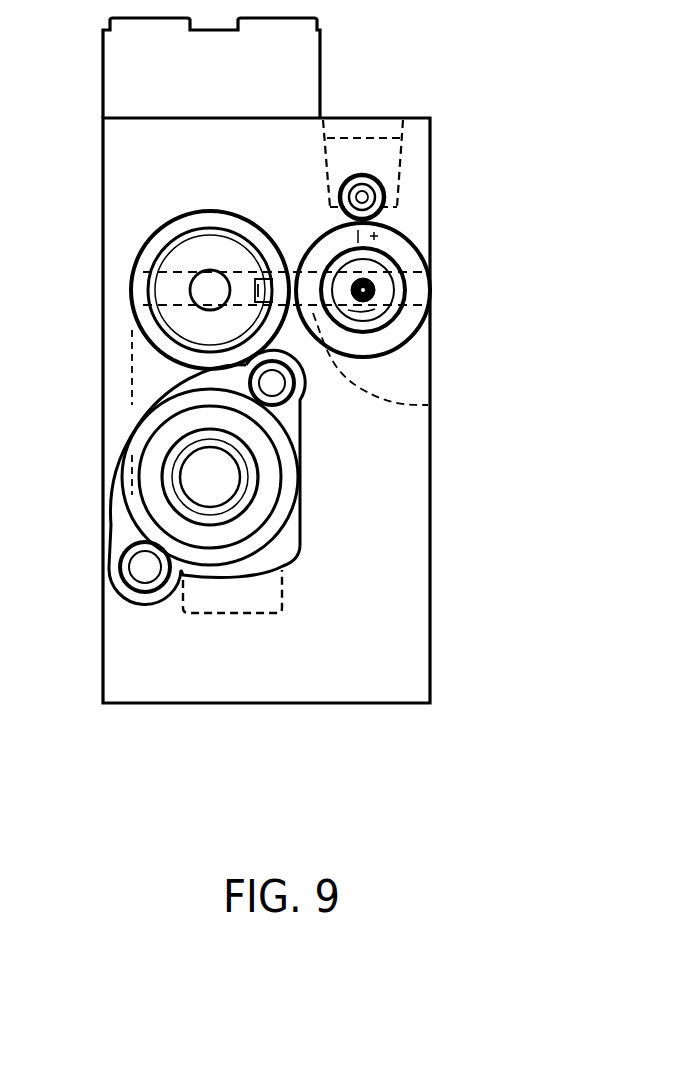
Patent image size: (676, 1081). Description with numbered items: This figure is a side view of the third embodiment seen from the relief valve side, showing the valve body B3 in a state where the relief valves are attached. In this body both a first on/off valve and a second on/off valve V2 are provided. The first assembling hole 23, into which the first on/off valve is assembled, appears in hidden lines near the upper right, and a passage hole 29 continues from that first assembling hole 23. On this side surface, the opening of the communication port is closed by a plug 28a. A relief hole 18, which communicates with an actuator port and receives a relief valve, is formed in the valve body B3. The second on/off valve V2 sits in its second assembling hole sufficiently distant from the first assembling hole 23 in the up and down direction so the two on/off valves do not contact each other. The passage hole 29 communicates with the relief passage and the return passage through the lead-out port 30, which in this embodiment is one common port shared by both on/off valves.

The valve body B3 is at (92, 650).
The relief hole 18 is at (170, 247).
The plug 28a is at (362, 173).
The first assembling hole 23 is at (393, 133).
The passage hole 29 is at (407, 232).
The second on/off valve V2 is at (400, 335).
The lead-out port 30 is at (428, 405).